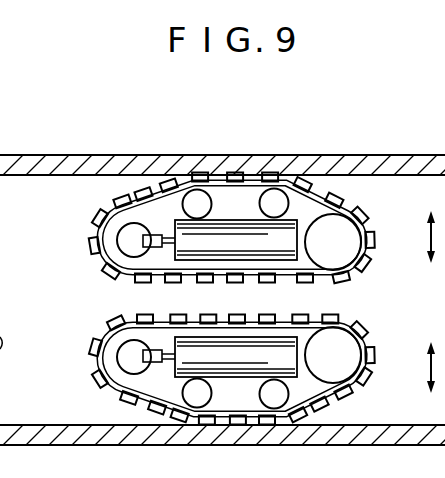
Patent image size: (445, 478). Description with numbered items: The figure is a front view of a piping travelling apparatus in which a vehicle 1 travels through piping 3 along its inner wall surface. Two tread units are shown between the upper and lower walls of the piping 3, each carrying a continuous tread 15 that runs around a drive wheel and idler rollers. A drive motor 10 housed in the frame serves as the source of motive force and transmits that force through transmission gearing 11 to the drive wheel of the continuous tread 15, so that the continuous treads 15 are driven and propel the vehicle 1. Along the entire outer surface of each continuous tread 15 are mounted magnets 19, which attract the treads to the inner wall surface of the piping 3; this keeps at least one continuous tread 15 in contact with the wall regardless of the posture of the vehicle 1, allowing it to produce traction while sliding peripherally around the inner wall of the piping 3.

The vehicle 1 is at (90, 352).
The piping 3 is at (82, 156).
The drive motor 10 is at (236, 233).
The transmission gearing 11 is at (132, 237).
The continuous tread 15 is at (106, 237).
The magnet 19 is at (92, 248).